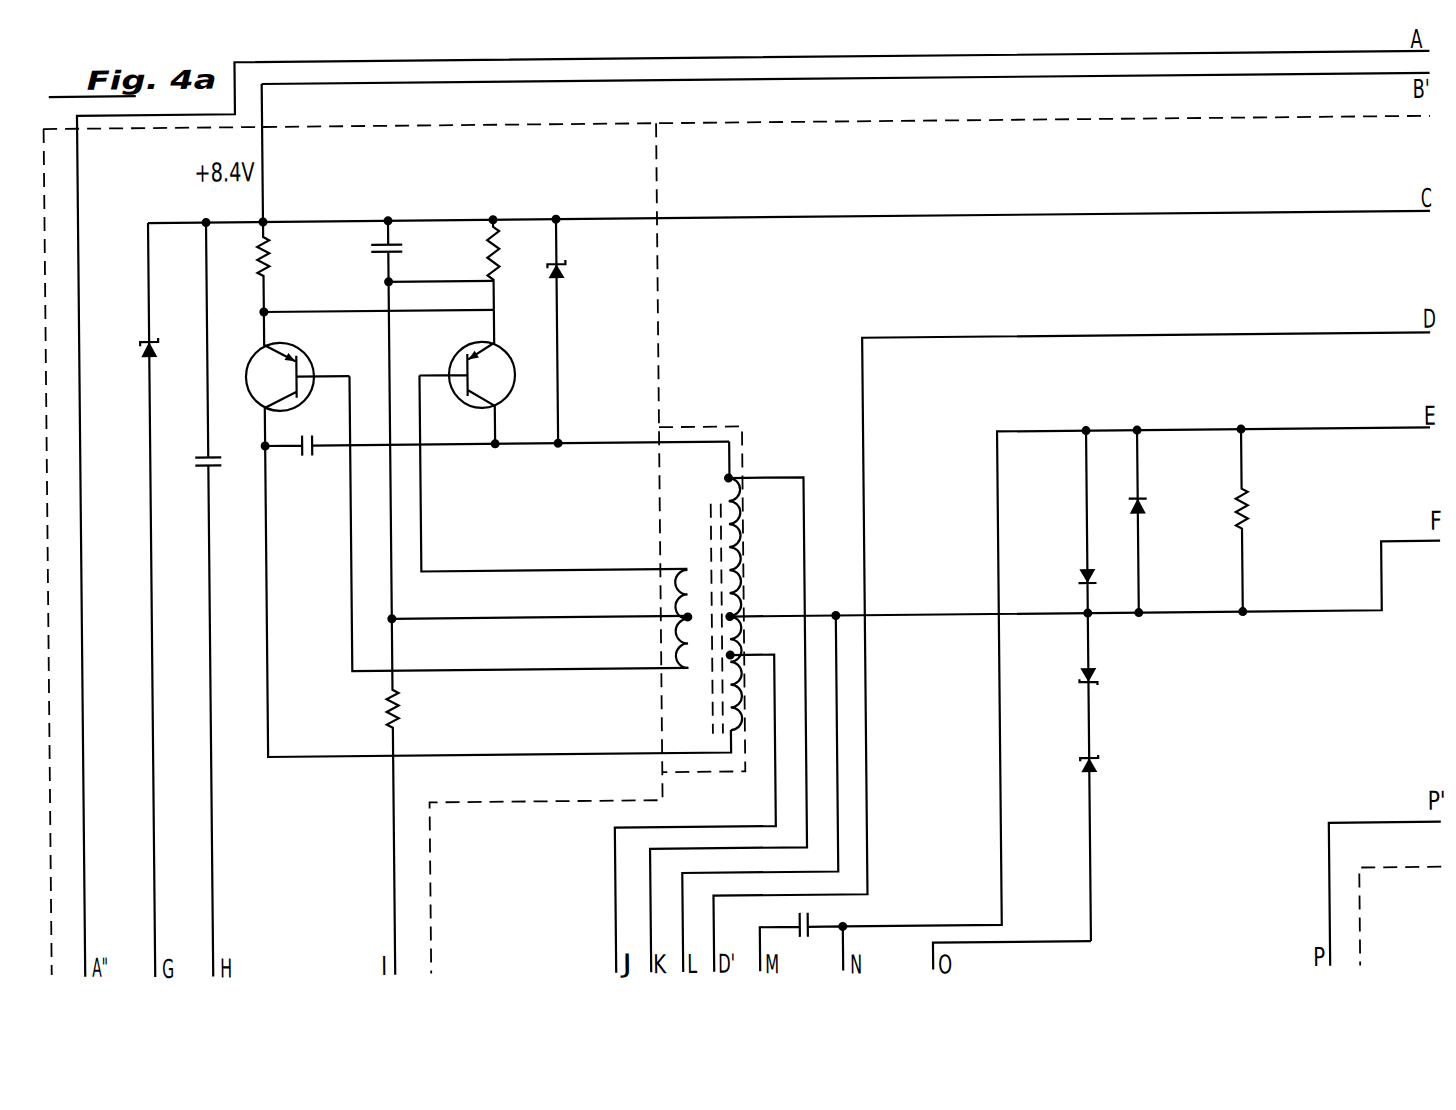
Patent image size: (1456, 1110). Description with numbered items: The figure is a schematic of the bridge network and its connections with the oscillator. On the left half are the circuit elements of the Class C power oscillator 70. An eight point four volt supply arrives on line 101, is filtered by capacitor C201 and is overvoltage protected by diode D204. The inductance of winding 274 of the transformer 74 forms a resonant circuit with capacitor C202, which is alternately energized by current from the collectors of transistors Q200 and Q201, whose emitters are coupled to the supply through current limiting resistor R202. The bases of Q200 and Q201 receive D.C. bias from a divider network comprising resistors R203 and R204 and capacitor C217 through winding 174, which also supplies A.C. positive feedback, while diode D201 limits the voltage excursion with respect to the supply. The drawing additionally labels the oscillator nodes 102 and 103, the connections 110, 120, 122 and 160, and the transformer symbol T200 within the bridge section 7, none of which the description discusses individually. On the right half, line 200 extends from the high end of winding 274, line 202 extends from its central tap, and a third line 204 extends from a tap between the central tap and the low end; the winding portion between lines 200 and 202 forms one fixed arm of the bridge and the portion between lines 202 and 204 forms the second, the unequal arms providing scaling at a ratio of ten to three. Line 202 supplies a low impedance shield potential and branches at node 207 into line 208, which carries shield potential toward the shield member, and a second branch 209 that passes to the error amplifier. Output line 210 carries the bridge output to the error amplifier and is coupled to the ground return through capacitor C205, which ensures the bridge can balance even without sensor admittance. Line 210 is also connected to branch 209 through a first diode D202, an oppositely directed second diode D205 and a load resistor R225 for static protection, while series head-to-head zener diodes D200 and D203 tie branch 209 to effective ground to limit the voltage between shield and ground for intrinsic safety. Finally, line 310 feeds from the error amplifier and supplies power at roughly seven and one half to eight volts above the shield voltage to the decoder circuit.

The bridge section 7 is at (1116, 165).
The power oscillator 70 is at (512, 167).
The transformer 74 is at (709, 430).
The line 101 is at (265, 166).
The supply node 102 is at (265, 221).
The node 103 is at (262, 311).
The supply wire C 110 is at (372, 214).
The center tap wire 120 is at (508, 620).
The feedback wire 122 is at (387, 594).
The line A 160 is at (80, 782).
The winding 174 is at (697, 577).
The line 200 is at (758, 481).
The line 202 is at (771, 618).
The third line 204 is at (716, 830).
The node 207 is at (834, 620).
The line 208 is at (835, 718).
The second branch 209 is at (935, 620).
The output line 210 is at (1040, 438).
The winding 274 is at (741, 737).
The line 310 is at (1058, 343).
The transistor Q200 is at (305, 359).
The transistor Q201 is at (472, 347).
The current limiting resistor R202 is at (270, 257).
The resistor R203 is at (393, 715).
The resistor R204 is at (488, 254).
The load resistor R225 is at (1250, 524).
The capacitor C201 is at (192, 458).
The capacitor C202 is at (311, 457).
The capacitor C205 is at (805, 928).
The capacitor C217 is at (372, 249).
The zener diode D200 is at (1095, 680).
The diode D201 is at (568, 272).
The first diode D202 is at (1078, 589).
The zener diode D203 is at (1095, 766).
The diode D204 is at (137, 340).
The second diode D205 is at (1144, 517).
The transformer T200 is at (715, 498).